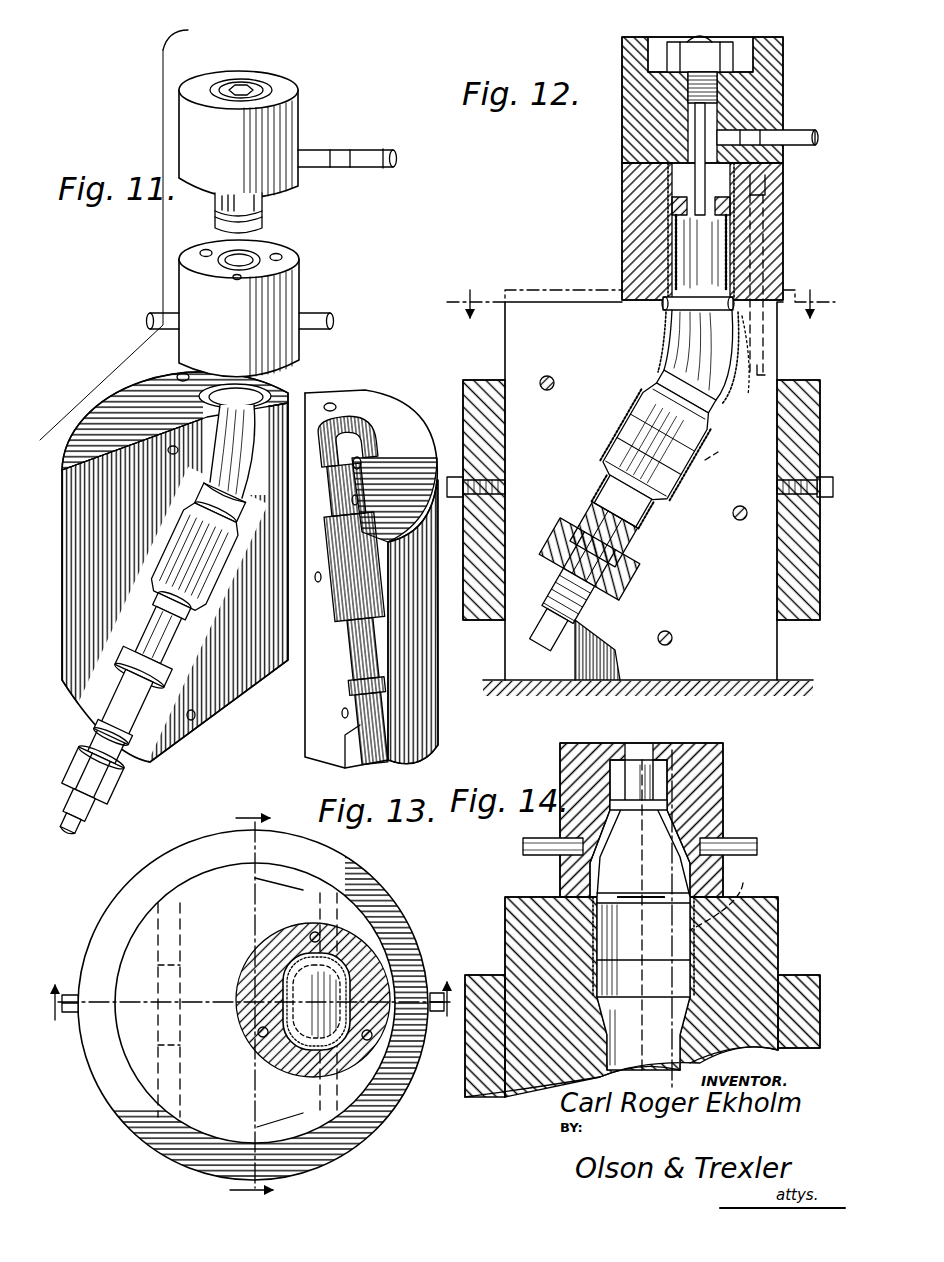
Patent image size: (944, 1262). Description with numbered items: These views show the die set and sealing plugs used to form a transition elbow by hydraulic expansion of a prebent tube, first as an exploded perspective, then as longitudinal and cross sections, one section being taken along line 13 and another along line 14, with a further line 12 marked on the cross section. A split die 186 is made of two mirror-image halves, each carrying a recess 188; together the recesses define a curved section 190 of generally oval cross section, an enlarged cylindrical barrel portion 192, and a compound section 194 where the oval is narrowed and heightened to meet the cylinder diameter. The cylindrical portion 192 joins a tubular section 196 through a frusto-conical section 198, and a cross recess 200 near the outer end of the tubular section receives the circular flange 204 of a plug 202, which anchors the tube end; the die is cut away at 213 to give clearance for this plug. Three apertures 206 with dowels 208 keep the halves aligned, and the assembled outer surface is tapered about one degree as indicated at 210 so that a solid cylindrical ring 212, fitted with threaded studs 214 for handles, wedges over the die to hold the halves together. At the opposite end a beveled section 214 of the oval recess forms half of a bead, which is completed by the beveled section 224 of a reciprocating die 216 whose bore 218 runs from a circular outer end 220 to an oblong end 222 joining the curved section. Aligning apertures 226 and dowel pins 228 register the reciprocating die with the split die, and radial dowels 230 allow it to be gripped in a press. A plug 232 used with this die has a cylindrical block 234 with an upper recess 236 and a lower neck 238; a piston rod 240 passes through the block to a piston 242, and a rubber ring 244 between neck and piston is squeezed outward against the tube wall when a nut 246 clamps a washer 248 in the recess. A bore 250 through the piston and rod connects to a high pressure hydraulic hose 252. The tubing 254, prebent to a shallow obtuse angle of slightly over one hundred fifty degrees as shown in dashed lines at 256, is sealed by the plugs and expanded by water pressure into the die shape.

In FIG. 11, the split die 186 is at (323, 716).
In FIG. 12, the split die 186 is at (524, 318).
In FIG. 13, the split die 186 is at (190, 887).
In FIG. 14, the split die 186 is at (770, 897).
In FIG. 11, the recess 188 is at (240, 582).
In FIG. 12, the recess 188 is at (594, 549).
In FIG. 14, the recess 188 is at (597, 940).
In FIG. 11, the curved section 190 is at (250, 420).
In FIG. 12, the curved section 190 is at (672, 333).
In FIG. 11, the cylindrical barrel portion 192 is at (205, 600).
In FIG. 12, the cylindrical barrel portion 192 is at (612, 430).
In FIG. 11, the compound section 194 is at (332, 527).
In FIG. 12, the compound section 194 is at (702, 432).
In FIG. 14, the compound section 194 is at (683, 830).
In FIG. 11, the tubular section 196 is at (225, 572).
In FIG. 14, the tubular section 196 is at (603, 1013).
In FIG. 11, the frusto-conical section 198 is at (195, 625).
In FIG. 12, the frusto-conical section 198 is at (605, 462).
In FIG. 11, the cross recess 200 is at (172, 672).
In FIG. 11, the plug 202 is at (116, 807).
In FIG. 12, the plug 202 is at (606, 612).
In FIG. 11, the circular flange 204 is at (123, 781).
In FIG. 12, the circular flange 204 is at (612, 596).
In FIG. 11, the apertures 206 is at (178, 449).
In FIG. 12, the apertures 206 is at (555, 383).
In FIG. 12, the dowels 208 is at (546, 389).
In FIG. 12, the tapered outer surface 210 is at (505, 353).
In FIG. 12, the cylindrical ring 212 is at (810, 588).
In FIG. 13, the cylindrical ring 212 is at (337, 870).
In FIG. 14, the cylindrical ring 212 is at (793, 977).
In FIG. 11, the cut-away portion 213 is at (170, 690).
In FIG. 12, the cut-away portion 213 is at (545, 672).
In FIG. 11, the studs / beveled section 214 is at (250, 428).
In FIG. 12, the studs / beveled section 214 is at (672, 313).
In FIG. 13, the studs / beveled section 214 is at (68, 994).
In FIG. 14, the studs / beveled section 214 is at (468, 950).
In FIG. 11, the reciprocating die 216 is at (277, 300).
In FIG. 12, the reciprocating die 216 is at (625, 208).
In FIG. 11, the bore 218 is at (247, 260).
In FIG. 12, the bore 218 is at (738, 260).
In FIG. 11, the circular outer end 220 is at (233, 278).
In FIG. 12, the circular outer end 220 is at (742, 178).
In FIG. 12, the oblong end 222 is at (668, 290).
In FIG. 12, the beveled section 224 is at (665, 300).
In FIG. 11, the aligning apertures 226 is at (282, 257).
In FIG. 12, the aligning apertures 226 is at (767, 196).
In FIG. 13, the aligning apertures 226 is at (308, 937).
In FIG. 12, the dowel pins 228 is at (767, 372).
In FIG. 13, the dowel pins 228 is at (314, 930).
In FIG. 11, the radially extending dowels 230 is at (150, 322).
In FIG. 14, the radially extending dowels 230 is at (533, 857).
In FIG. 11, the plug 232 is at (274, 123).
In FIG. 12, the plug 232 is at (620, 122).
In FIG. 11, the cylindrical block 234 is at (273, 115).
In FIG. 12, the cylindrical block 234 is at (697, 130).
In FIG. 12, the recess 236 is at (645, 35).
In FIG. 11, the neck 238 is at (215, 198).
In FIG. 12, the neck 238 is at (672, 186).
In FIG. 14, the neck 238 is at (667, 778).
In FIG. 12, the piston rod 240 is at (697, 140).
In FIG. 11, the piston 242 is at (253, 217).
In FIG. 12, the piston 242 is at (672, 222).
In FIG. 14, the piston 242 is at (610, 812).
In FIG. 11, the rubber ring 244 is at (215, 206).
In FIG. 12, the rubber ring 244 is at (742, 215).
In FIG. 14, the rubber ring 244 is at (663, 790).
In FIG. 12, the nut 246 is at (668, 55).
In FIG. 12, the washer 248 is at (700, 80).
In FIG. 12, the bore 250 is at (665, 180).
In FIG. 11, the hydraulic hose 252 is at (363, 168).
In FIG. 12, the hydraulic hose 252 is at (805, 128).
In FIG. 12, the cylindrical tubing 254 is at (668, 358).
In FIG. 13, the cylindrical tubing 254 is at (283, 997).
In FIG. 12, the prebent tube shape 256 is at (727, 452).
In FIG. 13, the prebent tube shape 256 is at (250, 973).
In FIG. 14, the prebent tube shape 256 is at (730, 895).
In FIG. 13, the section line 12- 12 is at (251, 1013).
In FIG. 12, the section line 13— 13 is at (828, 286).
In FIG. 13, the section line 14— 14 is at (224, 1203).